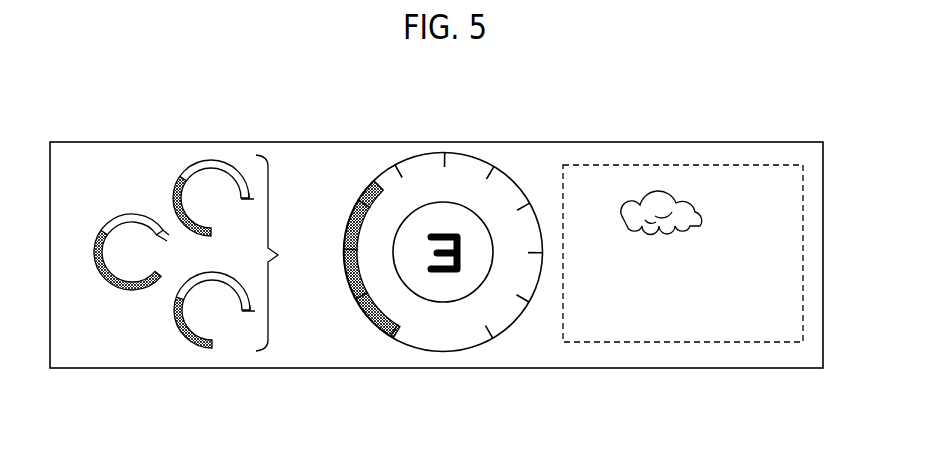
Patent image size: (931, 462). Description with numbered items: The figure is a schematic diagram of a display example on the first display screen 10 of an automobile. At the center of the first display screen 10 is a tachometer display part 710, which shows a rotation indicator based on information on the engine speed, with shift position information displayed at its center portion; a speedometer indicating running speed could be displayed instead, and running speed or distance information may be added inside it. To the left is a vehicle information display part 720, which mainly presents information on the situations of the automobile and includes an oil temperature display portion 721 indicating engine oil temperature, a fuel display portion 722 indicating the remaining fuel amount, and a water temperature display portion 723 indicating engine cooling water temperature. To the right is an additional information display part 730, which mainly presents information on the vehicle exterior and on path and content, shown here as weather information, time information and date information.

The first display screen 10 is at (750, 368).
The tachometer display part 710 is at (518, 190).
The vehicle information display part 720 is at (188, 253).
The oil temperature display portion 721 is at (201, 165).
The fuel display portion 722 is at (96, 277).
The water temperature display portion 723 is at (188, 338).
The additional information display part 730 is at (735, 164).